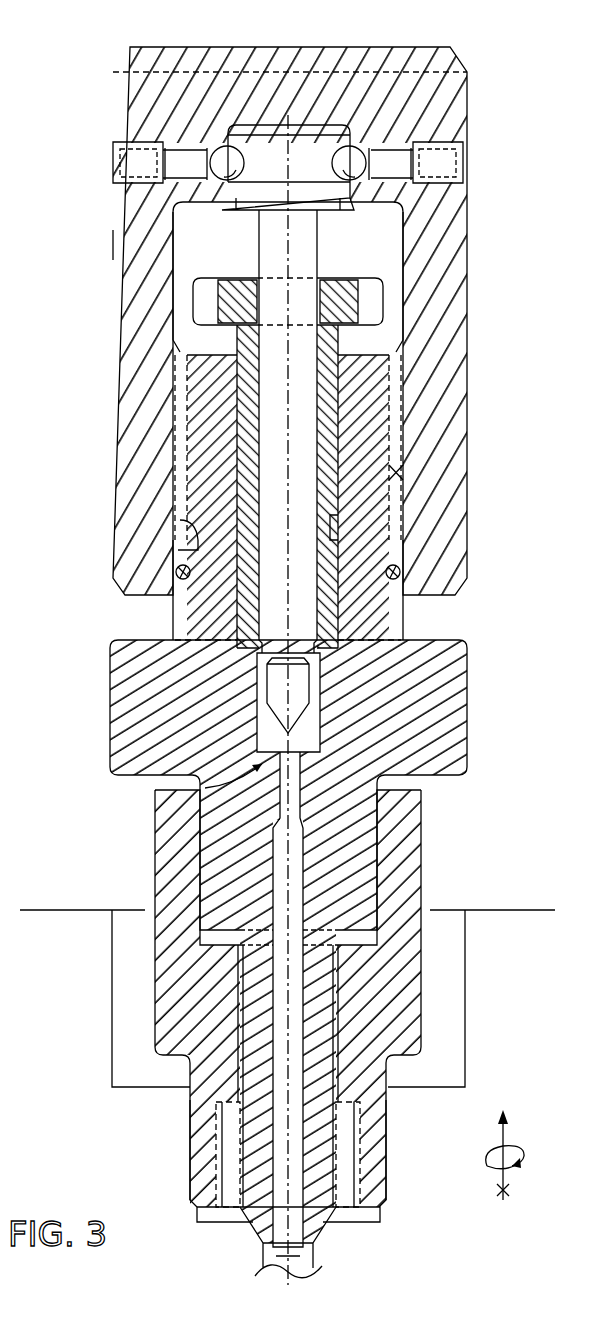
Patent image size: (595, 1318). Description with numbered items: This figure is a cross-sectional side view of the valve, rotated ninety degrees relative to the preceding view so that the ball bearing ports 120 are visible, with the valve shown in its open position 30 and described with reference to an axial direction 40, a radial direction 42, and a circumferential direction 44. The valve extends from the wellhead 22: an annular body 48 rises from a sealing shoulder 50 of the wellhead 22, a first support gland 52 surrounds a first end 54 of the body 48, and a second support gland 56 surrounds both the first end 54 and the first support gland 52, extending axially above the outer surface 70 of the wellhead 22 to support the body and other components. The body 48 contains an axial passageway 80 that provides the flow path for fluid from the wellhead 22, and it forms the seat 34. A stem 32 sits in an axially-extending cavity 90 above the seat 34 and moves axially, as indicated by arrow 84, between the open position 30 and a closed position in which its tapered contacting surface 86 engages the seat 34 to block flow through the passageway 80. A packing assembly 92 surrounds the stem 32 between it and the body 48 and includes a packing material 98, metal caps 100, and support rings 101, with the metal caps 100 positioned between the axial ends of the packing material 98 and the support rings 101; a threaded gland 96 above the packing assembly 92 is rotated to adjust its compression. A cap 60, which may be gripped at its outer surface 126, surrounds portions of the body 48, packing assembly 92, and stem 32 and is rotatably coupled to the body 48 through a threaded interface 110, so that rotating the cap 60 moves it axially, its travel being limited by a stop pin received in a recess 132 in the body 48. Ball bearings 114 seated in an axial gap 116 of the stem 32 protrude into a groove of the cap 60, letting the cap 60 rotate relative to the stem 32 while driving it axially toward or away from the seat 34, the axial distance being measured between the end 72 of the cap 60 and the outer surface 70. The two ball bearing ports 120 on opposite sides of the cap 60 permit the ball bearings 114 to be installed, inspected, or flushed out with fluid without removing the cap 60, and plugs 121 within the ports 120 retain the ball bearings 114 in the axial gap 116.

The wellhead 22 is at (44, 1034).
The open position 30 is at (212, 744).
The stem 32 is at (272, 462).
The seat 34 is at (182, 787).
The axial axis or direction 40 is at (505, 1180).
The radial axis or direction 42 is at (498, 1198).
The circumferential axis or direction 44 is at (487, 1166).
The body 48 is at (368, 860).
The sealing shoulder 50 is at (218, 1222).
The first support gland 52 is at (348, 1157).
The first end 54 is at (250, 1243).
The second support gland 56 is at (413, 1013).
The cap 60 is at (445, 58).
The outer surface 70 is at (85, 910).
The end 72 is at (160, 46).
The passageway 80 is at (270, 862).
The arrow 84 is at (400, 625).
The contacting surface 86 is at (260, 722).
The cavity 90 is at (264, 698).
The packing assembly 92 is at (188, 606).
The gland 96 is at (380, 463).
The packing material 98 is at (177, 582).
The metal caps 100 is at (248, 512).
The support rings 101 is at (330, 528).
The interface 110 is at (400, 395).
The ball bearings 114 is at (358, 170).
The axial gap 116 is at (265, 160).
The ball bearing ports 120 is at (135, 184).
The plugs 121 is at (120, 154).
The outer surface 126 is at (125, 248).
The recess 132 is at (186, 540).